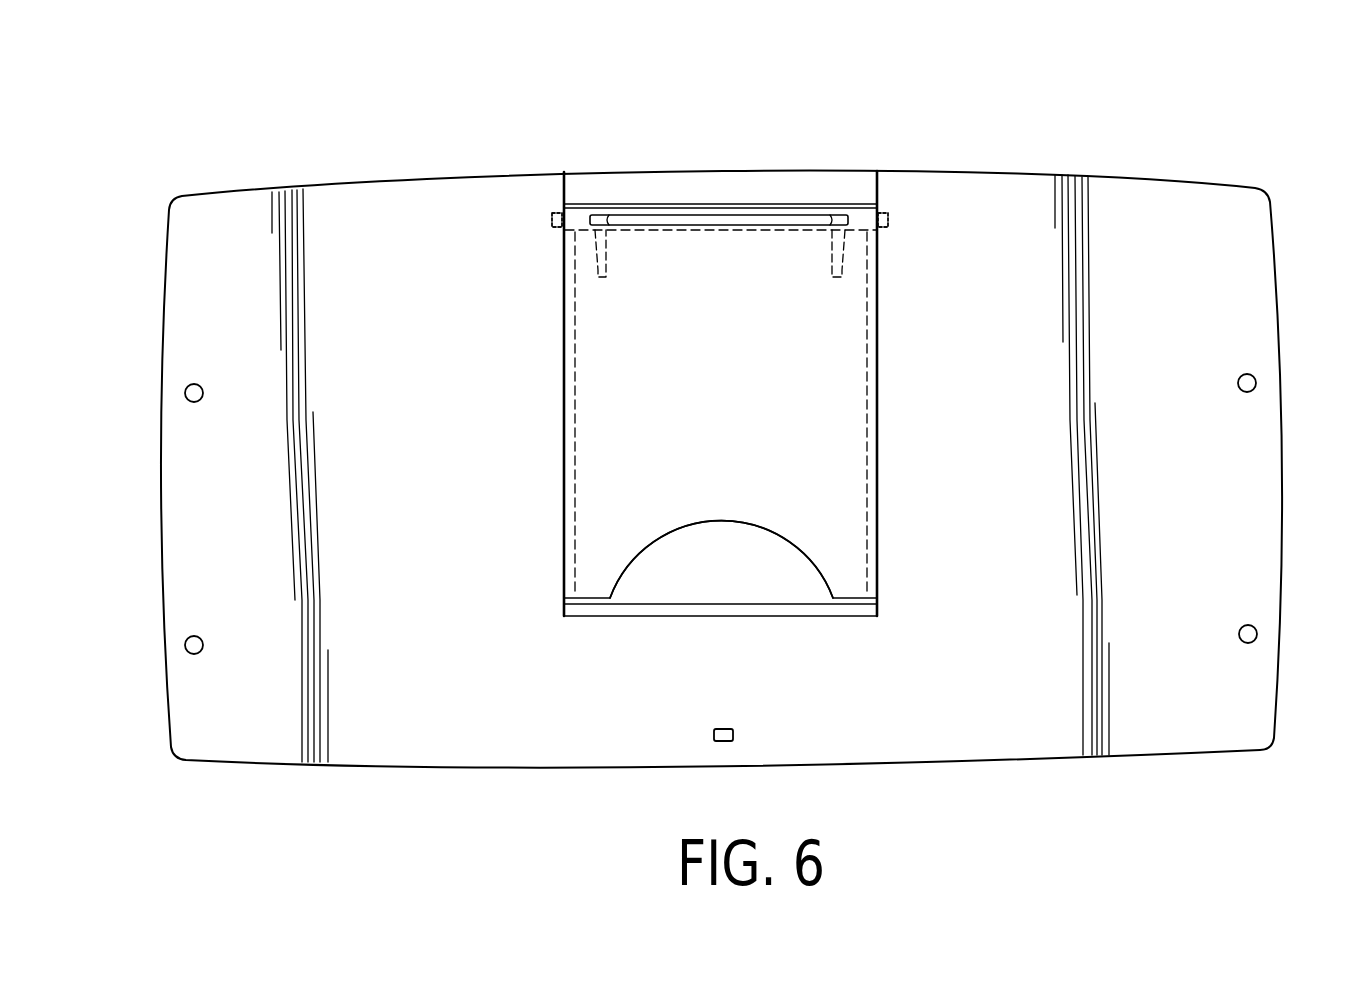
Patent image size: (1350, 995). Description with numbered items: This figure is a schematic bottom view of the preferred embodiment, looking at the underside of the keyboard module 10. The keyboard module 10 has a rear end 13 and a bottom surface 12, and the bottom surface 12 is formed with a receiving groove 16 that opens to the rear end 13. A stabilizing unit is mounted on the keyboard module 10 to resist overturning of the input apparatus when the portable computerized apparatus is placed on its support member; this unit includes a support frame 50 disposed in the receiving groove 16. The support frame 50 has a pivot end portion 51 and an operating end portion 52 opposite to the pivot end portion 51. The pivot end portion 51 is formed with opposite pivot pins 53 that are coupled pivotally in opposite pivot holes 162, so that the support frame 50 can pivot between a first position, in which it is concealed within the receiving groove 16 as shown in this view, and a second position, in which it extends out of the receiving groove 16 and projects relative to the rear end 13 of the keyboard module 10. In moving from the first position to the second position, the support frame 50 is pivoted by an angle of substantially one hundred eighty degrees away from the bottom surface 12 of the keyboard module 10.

The keyboard module 10 is at (1147, 182).
The bottom surface 12 is at (1225, 300).
The rear end 13 is at (1040, 175).
The receiving groove 16 is at (877, 342).
The support frame 50 is at (587, 363).
The pivot end portion 51 is at (580, 217).
The operating end portion 52 is at (593, 570).
The pivot pins 53 is at (720, 220).
The pivot holes 162 is at (558, 214).